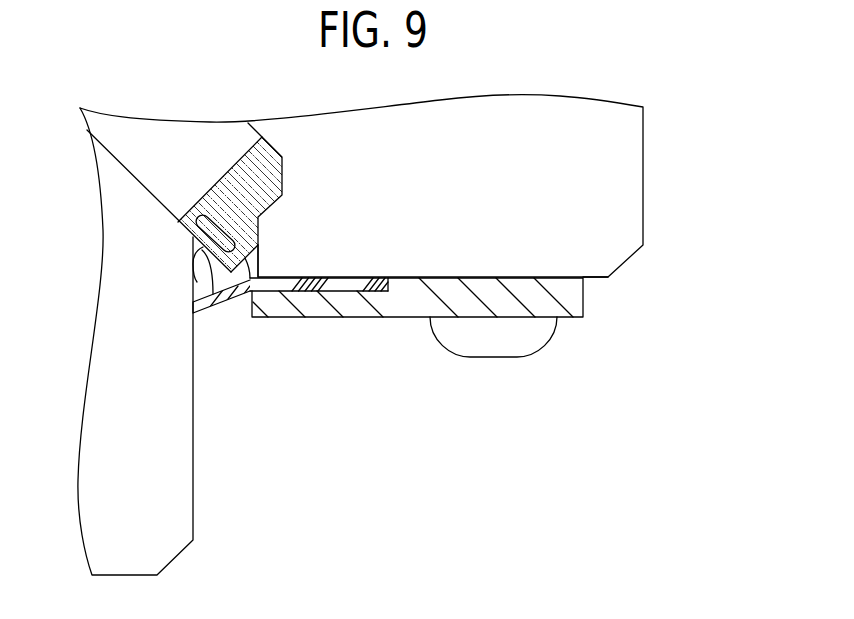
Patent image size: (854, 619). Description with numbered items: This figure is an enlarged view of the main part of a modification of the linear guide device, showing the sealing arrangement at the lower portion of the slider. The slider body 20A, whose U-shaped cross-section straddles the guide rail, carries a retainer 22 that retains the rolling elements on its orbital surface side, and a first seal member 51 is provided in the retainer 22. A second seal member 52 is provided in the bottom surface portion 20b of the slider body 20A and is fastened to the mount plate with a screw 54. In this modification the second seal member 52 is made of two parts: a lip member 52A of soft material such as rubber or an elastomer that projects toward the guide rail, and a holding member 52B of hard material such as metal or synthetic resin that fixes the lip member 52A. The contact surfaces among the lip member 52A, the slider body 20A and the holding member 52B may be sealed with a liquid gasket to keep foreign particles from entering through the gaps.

The slider body 20A is at (637, 178).
The bottom surface portion 20b is at (593, 280).
The retainer 22 is at (250, 281).
The first seal member 51 is at (213, 300).
The second seal member 52 is at (420, 387).
The lip member 52A is at (334, 292).
The holding member 52B is at (397, 312).
The screw 54 is at (495, 350).